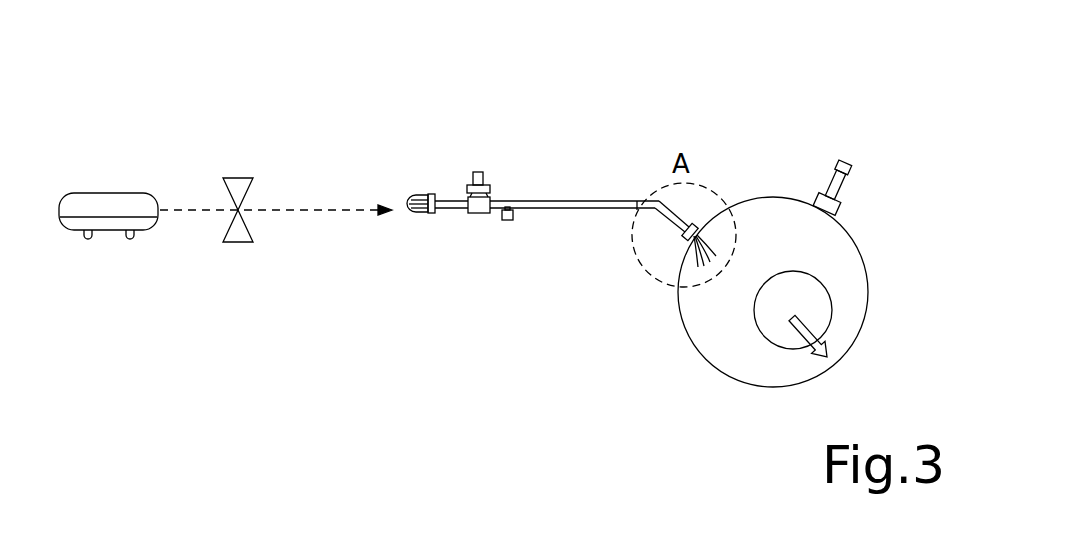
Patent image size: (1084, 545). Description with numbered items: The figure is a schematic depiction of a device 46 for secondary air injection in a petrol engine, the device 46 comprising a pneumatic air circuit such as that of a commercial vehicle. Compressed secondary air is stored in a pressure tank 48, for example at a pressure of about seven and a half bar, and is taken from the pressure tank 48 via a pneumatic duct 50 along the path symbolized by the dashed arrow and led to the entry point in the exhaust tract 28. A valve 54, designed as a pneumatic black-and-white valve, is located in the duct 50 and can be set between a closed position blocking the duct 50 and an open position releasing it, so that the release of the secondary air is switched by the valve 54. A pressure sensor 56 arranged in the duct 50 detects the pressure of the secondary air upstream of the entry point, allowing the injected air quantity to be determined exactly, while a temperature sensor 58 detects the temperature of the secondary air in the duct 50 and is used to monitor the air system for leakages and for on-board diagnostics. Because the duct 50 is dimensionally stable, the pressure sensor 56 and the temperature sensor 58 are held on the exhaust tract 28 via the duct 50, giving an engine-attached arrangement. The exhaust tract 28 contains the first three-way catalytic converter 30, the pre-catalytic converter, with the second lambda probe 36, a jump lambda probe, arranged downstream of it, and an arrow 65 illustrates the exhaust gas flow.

The exhaust tract 28 is at (779, 188).
The first three-way catalytic converter 30 is at (867, 282).
The second lambda probe 36 is at (851, 177).
The device 46 is at (322, 320).
The pressure tank 48 is at (118, 210).
The pneumatic duct 50 is at (593, 210).
The valve 54 is at (238, 242).
The pressure sensor 56 is at (483, 172).
The temperature sensor 58 is at (507, 220).
The arrow 65 is at (790, 345).